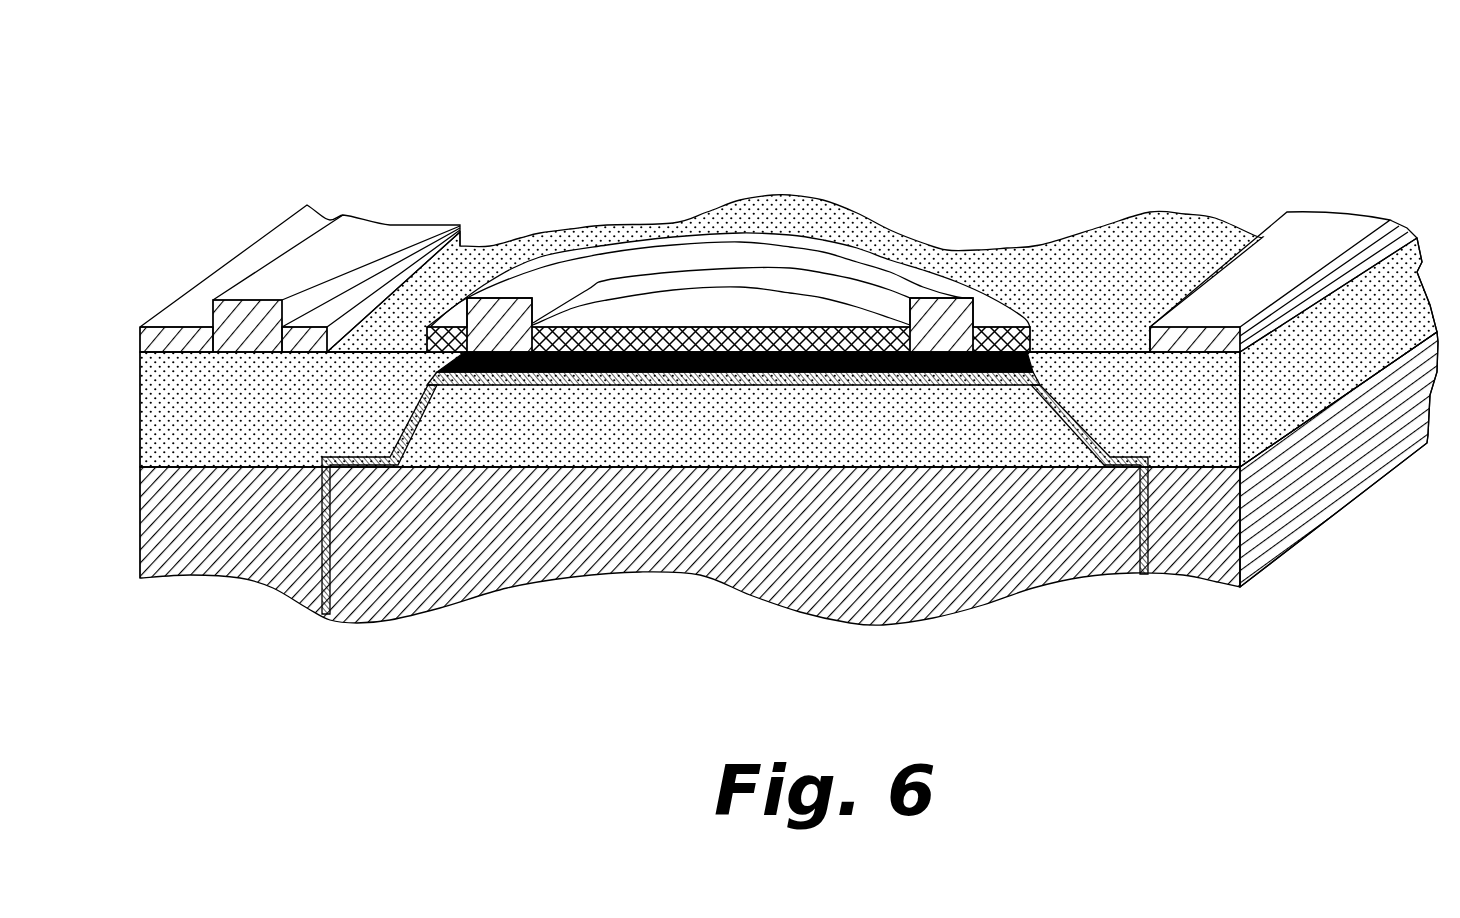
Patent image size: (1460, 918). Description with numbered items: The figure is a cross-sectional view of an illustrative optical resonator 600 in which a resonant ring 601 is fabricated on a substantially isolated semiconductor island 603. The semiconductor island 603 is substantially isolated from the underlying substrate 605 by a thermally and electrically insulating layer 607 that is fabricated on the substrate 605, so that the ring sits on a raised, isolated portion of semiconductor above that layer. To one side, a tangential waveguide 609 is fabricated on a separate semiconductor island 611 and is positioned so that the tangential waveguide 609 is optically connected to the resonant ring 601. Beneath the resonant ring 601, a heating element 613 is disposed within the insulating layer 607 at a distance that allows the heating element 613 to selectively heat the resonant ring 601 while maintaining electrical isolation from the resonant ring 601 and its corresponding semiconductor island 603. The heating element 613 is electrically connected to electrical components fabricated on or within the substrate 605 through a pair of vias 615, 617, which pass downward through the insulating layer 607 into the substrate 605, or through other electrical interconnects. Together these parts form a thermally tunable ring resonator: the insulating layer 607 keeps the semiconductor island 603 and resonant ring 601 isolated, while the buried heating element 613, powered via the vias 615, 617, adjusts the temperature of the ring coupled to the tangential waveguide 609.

The optical resonator 600 is at (773, 361).
The resonant ring 601 is at (910, 322).
The semiconductor island 603 is at (937, 263).
The substrate 605 is at (1283, 493).
The insulating layer 607 is at (1424, 250).
The tangential waveguide 609 is at (213, 313).
The separate semiconductor island 611 is at (140, 343).
The heating element 613 is at (1047, 353).
The via 615 is at (1140, 523).
The via 617 is at (322, 553).